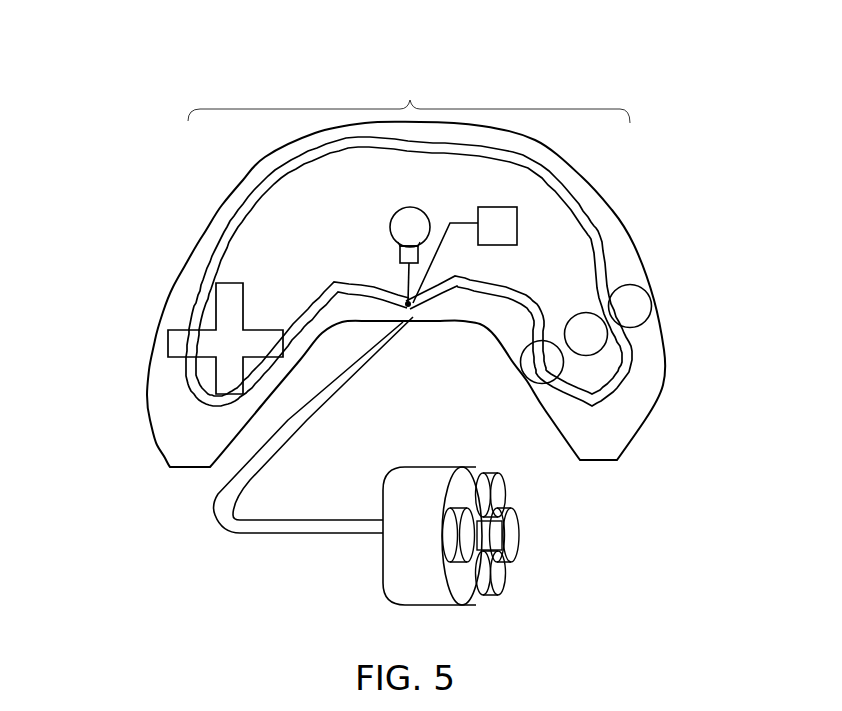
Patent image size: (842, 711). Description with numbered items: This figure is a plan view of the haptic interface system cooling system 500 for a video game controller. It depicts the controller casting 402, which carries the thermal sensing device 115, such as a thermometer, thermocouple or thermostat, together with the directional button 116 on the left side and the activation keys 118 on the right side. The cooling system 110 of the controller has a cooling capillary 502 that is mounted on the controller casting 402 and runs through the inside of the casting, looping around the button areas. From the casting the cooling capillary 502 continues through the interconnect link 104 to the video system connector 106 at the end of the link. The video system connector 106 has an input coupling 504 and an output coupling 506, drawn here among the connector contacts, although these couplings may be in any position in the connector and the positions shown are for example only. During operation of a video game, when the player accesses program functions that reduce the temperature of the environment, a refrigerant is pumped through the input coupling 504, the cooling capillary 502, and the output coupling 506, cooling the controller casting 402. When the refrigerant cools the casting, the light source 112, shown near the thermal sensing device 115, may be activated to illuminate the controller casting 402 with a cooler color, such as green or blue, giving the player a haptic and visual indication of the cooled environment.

The haptic interface system cooling system 500 is at (183, 92).
The cooling system 110 is at (410, 98).
The light source 112 is at (420, 227).
The thermal sensing device 115 is at (497, 230).
The directional button 116 is at (225, 340).
The activation keys 118 is at (632, 307).
The controller casting 402 is at (163, 450).
The cooling capillary 502 is at (602, 392).
The interconnect link 104 is at (255, 475).
The video system connector 106 is at (434, 516).
The input coupling 504 is at (513, 535).
The output coupling 506 is at (467, 533).